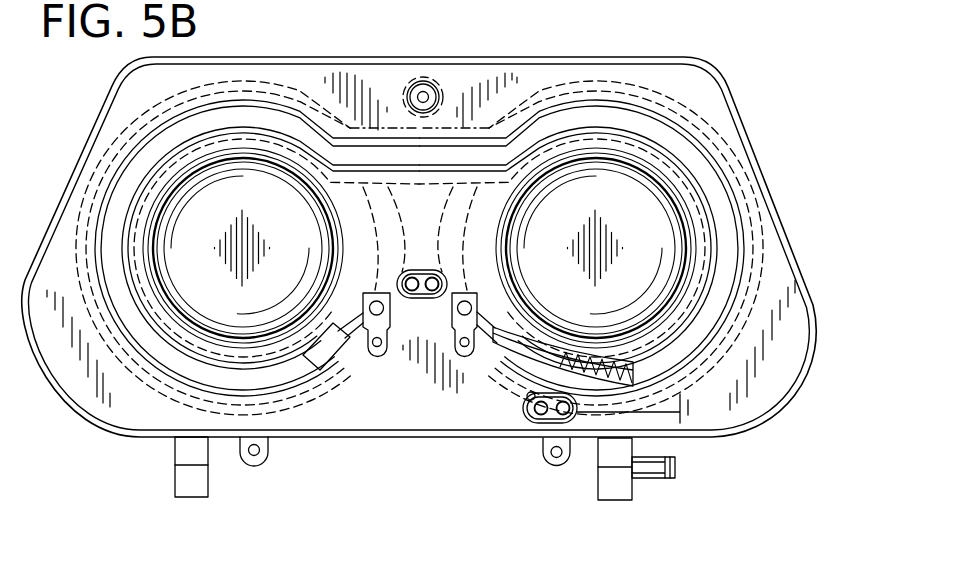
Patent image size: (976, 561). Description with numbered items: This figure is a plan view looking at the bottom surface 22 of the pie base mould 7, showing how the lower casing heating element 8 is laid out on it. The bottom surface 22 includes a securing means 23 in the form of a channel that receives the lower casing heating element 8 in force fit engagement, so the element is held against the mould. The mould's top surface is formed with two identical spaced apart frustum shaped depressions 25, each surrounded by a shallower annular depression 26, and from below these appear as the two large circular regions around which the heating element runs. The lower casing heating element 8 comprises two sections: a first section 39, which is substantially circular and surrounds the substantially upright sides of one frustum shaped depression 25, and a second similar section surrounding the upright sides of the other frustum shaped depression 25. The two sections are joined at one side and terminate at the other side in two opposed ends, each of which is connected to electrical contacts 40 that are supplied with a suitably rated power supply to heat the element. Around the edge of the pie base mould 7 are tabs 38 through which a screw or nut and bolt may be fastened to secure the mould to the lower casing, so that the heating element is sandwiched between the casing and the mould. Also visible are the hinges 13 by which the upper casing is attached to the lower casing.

The pie base mould 7 is at (815, 332).
The lower casing heating element 8 is at (136, 169).
The hinge 13 is at (208, 480).
The bottom surface 22 is at (703, 102).
The securing means 23 is at (728, 177).
The frustum shaped depression 25 is at (712, 216).
The annular depression 26 is at (790, 267).
The tab 38 is at (268, 456).
The first section 39 is at (113, 218).
The electrical contacts 40 is at (487, 357).